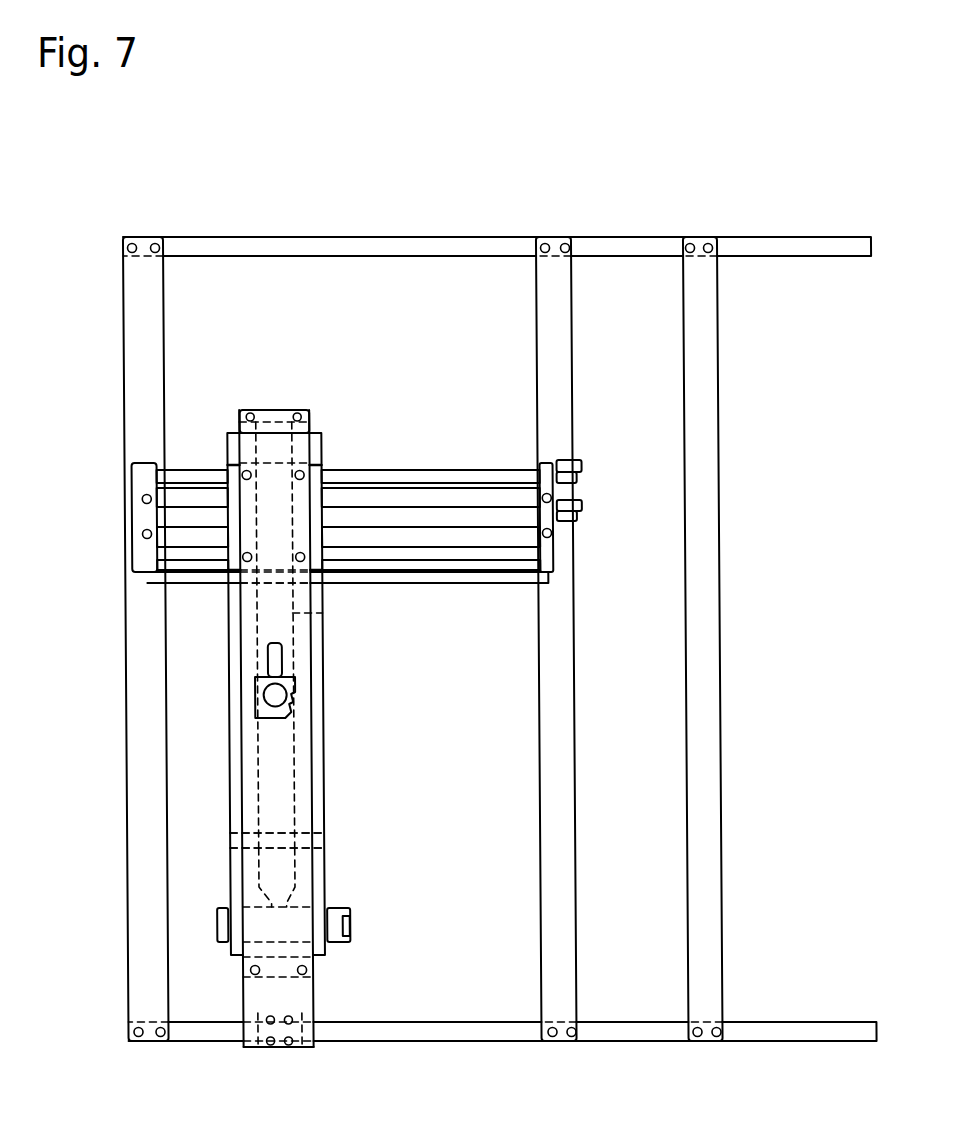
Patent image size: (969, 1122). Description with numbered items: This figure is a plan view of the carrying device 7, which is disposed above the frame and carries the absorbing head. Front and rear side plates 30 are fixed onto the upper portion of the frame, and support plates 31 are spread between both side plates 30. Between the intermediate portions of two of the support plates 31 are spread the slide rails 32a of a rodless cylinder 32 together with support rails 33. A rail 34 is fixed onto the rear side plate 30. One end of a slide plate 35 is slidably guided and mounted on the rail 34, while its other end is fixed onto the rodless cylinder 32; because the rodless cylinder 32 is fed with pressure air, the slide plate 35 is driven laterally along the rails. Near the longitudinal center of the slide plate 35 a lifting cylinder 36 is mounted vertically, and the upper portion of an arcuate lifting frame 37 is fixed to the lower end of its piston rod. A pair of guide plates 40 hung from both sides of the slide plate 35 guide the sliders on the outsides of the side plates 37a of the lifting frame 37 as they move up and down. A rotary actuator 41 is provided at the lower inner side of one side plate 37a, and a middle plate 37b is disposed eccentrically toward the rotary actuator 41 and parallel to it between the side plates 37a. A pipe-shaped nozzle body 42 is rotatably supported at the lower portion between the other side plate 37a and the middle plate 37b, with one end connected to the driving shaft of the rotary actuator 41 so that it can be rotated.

The carrying device 7 is at (522, 205).
The side plate 30 is at (372, 257).
The support plate 31 is at (163, 334).
The rodless cylinder 32 is at (357, 528).
The slide rail 32a is at (400, 512).
The support rail 33 is at (445, 580).
The rail 34 is at (369, 1030).
The slide plate 35 is at (302, 995).
The lifting cylinder 36 is at (280, 692).
The lifting frame 37 is at (283, 708).
The side plate 37a is at (226, 452).
The middle plate 37b is at (229, 825).
The guide plate 40 is at (301, 423).
The rotary actuator 41 is at (326, 918).
The nozzle body 42 is at (320, 613).